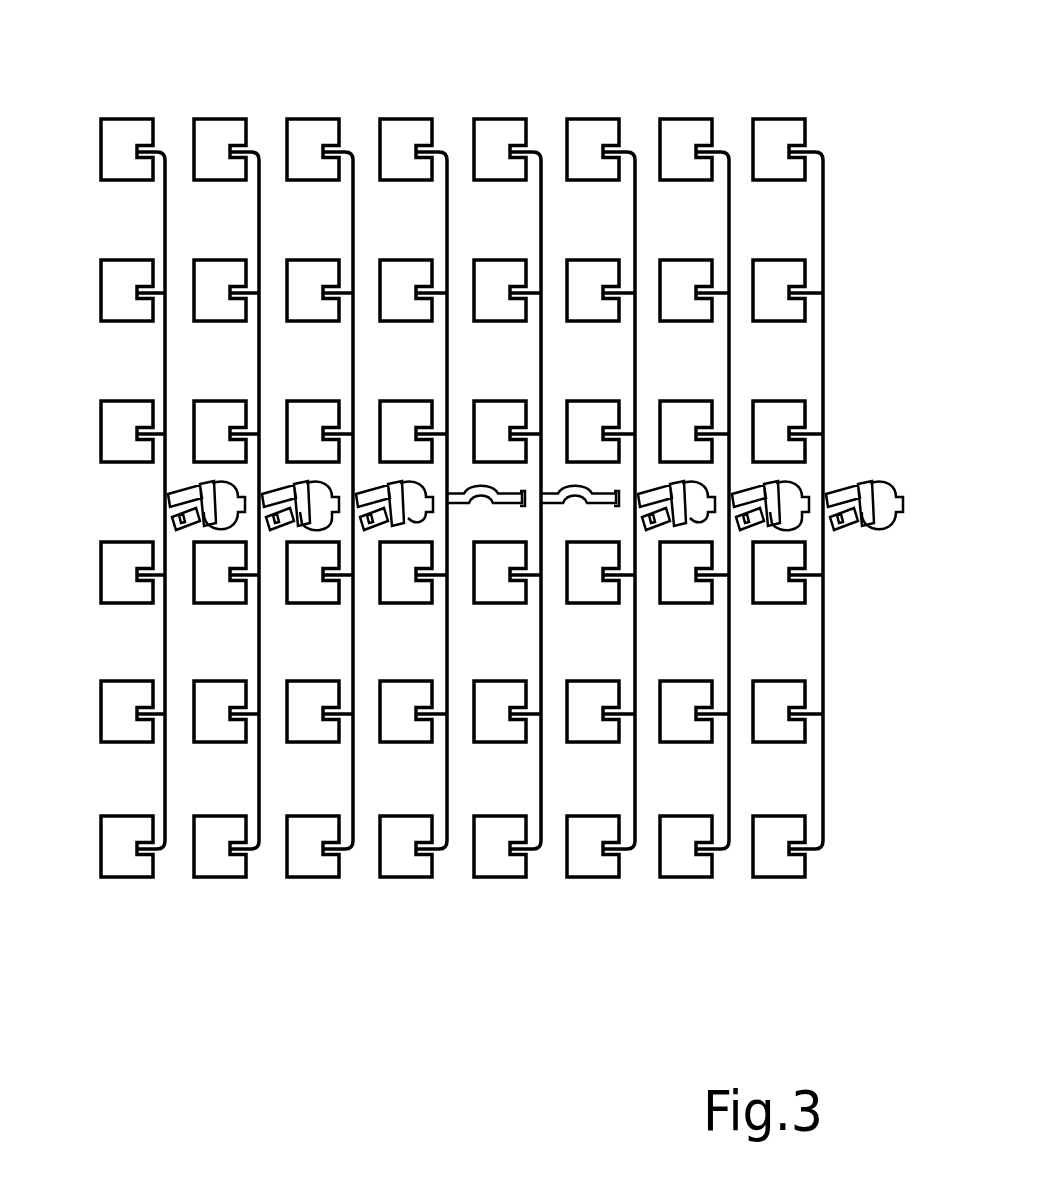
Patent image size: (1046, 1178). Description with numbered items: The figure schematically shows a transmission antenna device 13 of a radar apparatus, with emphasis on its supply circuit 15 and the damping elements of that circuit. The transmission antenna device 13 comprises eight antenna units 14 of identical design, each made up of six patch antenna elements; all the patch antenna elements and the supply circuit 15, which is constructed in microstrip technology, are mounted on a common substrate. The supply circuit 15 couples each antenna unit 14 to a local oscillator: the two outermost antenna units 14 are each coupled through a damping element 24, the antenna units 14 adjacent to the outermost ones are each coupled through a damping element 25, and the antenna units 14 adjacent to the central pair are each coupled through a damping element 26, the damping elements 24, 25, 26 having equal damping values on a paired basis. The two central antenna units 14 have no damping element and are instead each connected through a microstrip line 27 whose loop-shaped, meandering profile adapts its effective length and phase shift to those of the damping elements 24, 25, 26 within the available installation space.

The transmission antenna device 13 is at (787, 84).
The antenna unit 14 is at (122, 892).
The supply circuit 15 is at (130, 497).
The damping element 24 is at (236, 489).
The damping element 25 is at (330, 489).
The damping element 26 is at (424, 489).
The microstrip line 27 is at (514, 494).